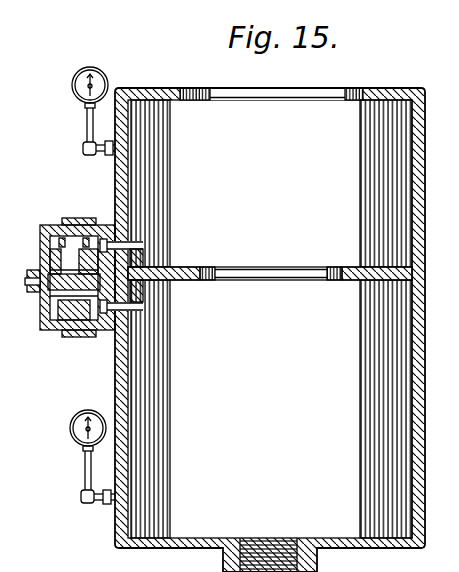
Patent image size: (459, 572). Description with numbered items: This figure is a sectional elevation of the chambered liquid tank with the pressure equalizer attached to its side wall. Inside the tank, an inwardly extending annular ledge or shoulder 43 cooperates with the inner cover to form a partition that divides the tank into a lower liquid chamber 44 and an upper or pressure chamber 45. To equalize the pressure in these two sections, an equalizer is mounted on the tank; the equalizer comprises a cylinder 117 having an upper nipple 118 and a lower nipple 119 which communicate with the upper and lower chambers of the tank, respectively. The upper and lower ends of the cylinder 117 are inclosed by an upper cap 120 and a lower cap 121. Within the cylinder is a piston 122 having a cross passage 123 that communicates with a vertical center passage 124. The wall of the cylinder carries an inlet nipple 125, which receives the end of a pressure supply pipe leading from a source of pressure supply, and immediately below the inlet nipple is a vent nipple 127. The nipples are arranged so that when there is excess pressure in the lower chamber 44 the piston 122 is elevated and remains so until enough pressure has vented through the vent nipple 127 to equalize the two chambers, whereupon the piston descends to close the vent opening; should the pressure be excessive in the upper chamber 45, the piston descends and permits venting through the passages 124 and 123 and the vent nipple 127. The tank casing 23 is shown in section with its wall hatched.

The tank casing 23 is at (424, 125).
The annular ledge or shoulder 43 is at (183, 283).
The lower liquid chamber 44 is at (231, 361).
The upper or pressure chamber 45 is at (267, 159).
The cylinder 117 is at (65, 276).
The upper nipple 118 is at (135, 243).
The lower nipple 119 is at (137, 310).
The upper cap 120 is at (70, 224).
The lower cap 121 is at (76, 337).
The piston 122 is at (43, 313).
The cross passage 123 is at (56, 312).
The vertical center passage 124 is at (75, 242).
The inlet nipple 125 is at (31, 271).
The vent nipple 127 is at (42, 290).